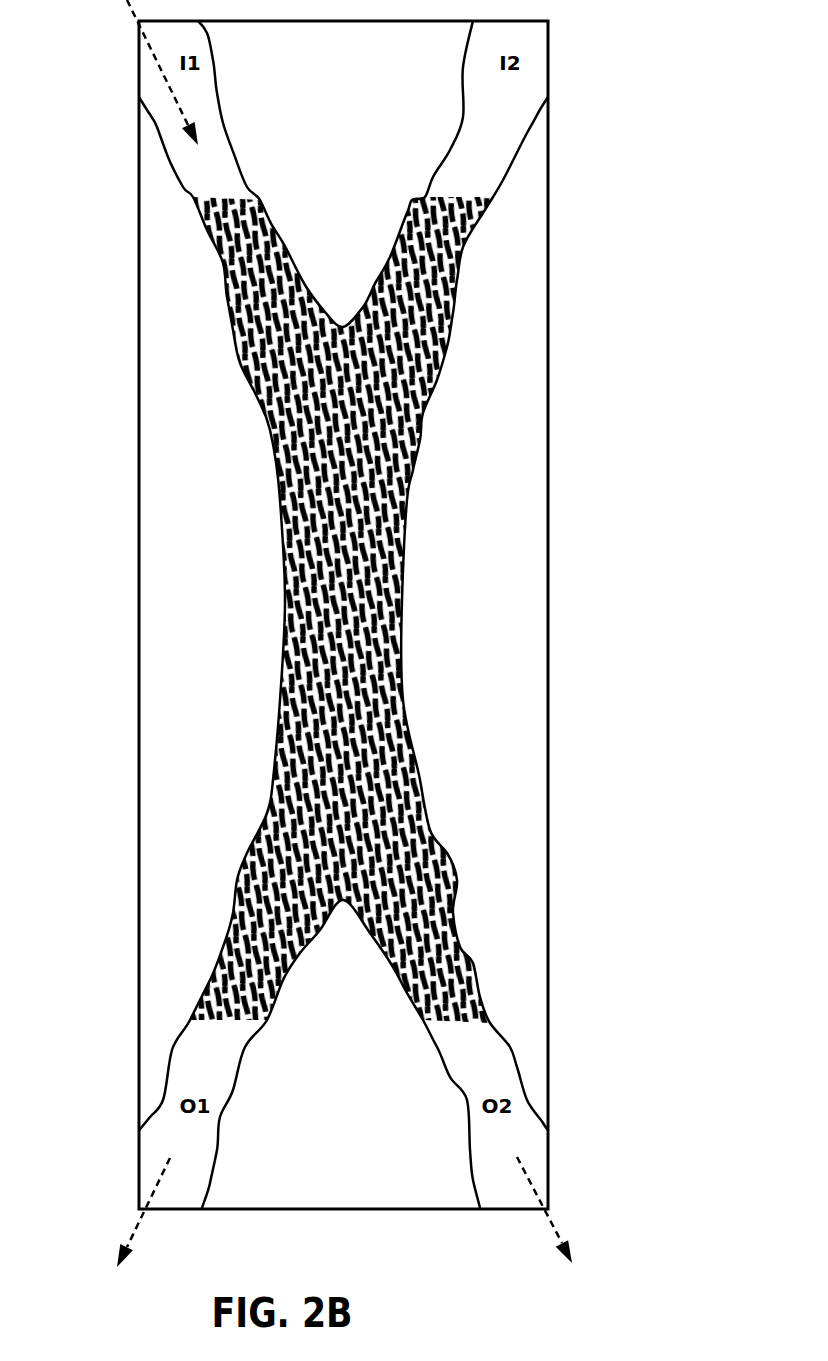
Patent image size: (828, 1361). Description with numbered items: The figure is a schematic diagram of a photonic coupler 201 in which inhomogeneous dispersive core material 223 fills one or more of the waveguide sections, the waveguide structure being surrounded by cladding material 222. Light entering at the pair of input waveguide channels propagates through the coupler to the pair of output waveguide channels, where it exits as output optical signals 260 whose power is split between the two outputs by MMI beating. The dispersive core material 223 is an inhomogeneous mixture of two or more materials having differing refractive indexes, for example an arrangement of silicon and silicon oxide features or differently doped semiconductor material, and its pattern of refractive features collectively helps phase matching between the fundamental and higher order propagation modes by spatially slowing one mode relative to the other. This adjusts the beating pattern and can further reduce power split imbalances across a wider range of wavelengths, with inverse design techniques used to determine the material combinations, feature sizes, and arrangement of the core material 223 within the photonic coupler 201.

The photonic coupler 201 is at (646, 1188).
The cladding material 222 is at (320, 178).
The inhomogeneous dispersive core material 223 is at (416, 513).
The output optical signals 260 is at (130, 1230).